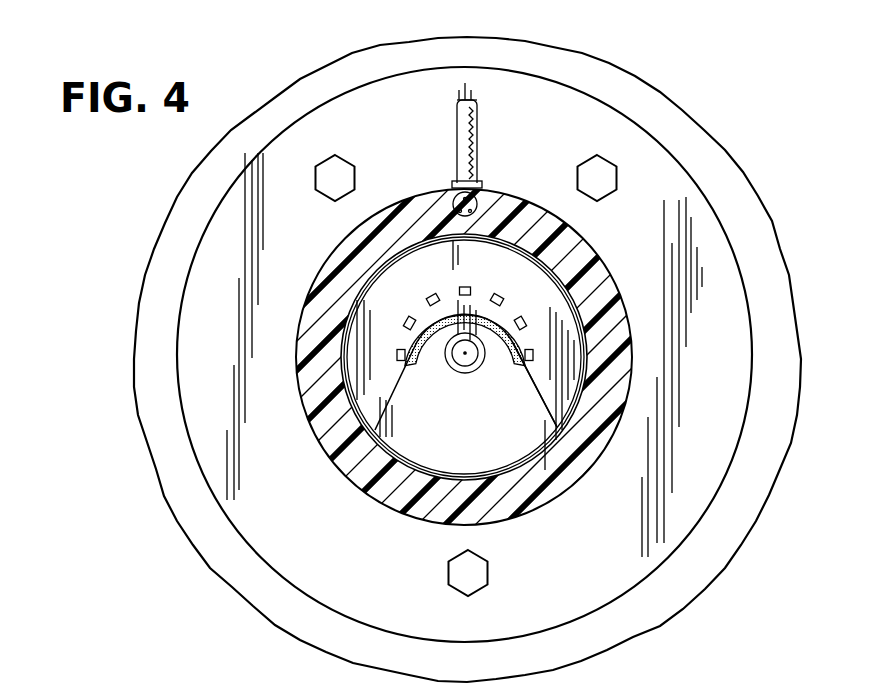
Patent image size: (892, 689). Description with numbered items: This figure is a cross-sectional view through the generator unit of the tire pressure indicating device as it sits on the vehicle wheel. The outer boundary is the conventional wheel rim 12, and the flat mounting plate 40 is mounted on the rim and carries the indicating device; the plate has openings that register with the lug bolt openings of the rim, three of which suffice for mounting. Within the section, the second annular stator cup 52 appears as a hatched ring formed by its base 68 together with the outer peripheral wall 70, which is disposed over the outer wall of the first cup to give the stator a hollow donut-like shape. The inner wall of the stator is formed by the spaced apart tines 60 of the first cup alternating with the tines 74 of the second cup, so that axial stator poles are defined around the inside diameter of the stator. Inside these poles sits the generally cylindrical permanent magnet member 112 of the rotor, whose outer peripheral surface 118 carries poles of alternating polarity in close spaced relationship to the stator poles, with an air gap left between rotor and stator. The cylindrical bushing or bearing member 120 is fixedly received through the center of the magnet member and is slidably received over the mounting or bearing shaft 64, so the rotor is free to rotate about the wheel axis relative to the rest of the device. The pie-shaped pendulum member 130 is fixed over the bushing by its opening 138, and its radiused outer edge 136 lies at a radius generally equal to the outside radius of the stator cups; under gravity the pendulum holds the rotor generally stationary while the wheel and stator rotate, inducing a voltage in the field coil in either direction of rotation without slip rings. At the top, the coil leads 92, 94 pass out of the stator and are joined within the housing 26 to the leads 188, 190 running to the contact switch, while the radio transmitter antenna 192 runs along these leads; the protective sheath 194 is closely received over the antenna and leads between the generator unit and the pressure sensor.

The wheel rim 12 is at (676, 140).
The mounting plate 40 is at (731, 313).
The housing 26 is at (582, 243).
The second annular stator cup 52 is at (557, 300).
The base 68 is at (563, 381).
The outer peripheral wall 70 is at (580, 425).
The pendulum member 130 is at (543, 494).
The radiused outer edge 136 is at (508, 448).
The tines 74 is at (481, 293).
The tines 60 is at (408, 322).
The permanent magnet member 112 is at (540, 347).
The outer peripheral surface 118 is at (396, 352).
The opening 138 is at (462, 374).
The bushing or bearing member 120 is at (468, 374).
The mounting or bearing shaft 64 is at (470, 360).
The protective sheath 194 is at (476, 143).
The radio transmitter antenna 192 is at (475, 95).
The lead 188 is at (457, 100).
The lead 190 is at (470, 83).
The lead 94 is at (480, 197).
The lead 92 is at (465, 200).